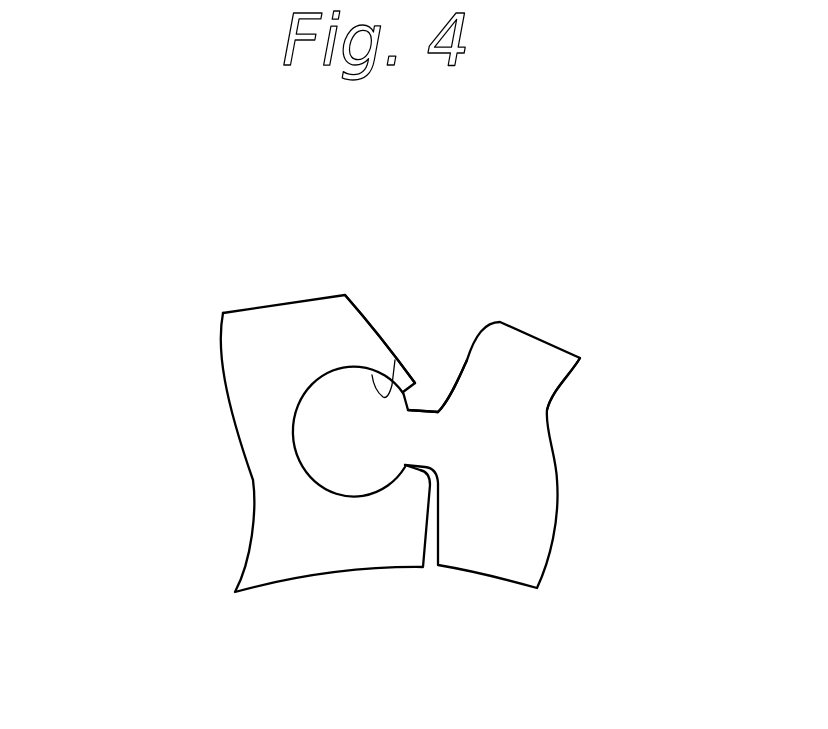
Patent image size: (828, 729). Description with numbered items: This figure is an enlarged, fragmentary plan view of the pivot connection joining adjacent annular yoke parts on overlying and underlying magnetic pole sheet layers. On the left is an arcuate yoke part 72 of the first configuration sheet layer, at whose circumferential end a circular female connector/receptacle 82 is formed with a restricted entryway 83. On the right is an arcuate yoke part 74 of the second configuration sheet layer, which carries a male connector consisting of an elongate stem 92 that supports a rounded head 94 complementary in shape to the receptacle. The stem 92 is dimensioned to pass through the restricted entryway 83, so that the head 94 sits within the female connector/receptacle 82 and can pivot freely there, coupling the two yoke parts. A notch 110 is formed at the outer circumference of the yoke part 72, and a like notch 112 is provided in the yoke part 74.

The arcuate yoke part 72 is at (243, 378).
The arcuate yoke part 74 is at (518, 472).
The female connector/receptacle 82 is at (395, 360).
The restricted entryway 83 is at (392, 482).
The stem 92 is at (423, 412).
The head 94 is at (330, 467).
The notch 110 is at (367, 305).
The notch 112 is at (467, 333).